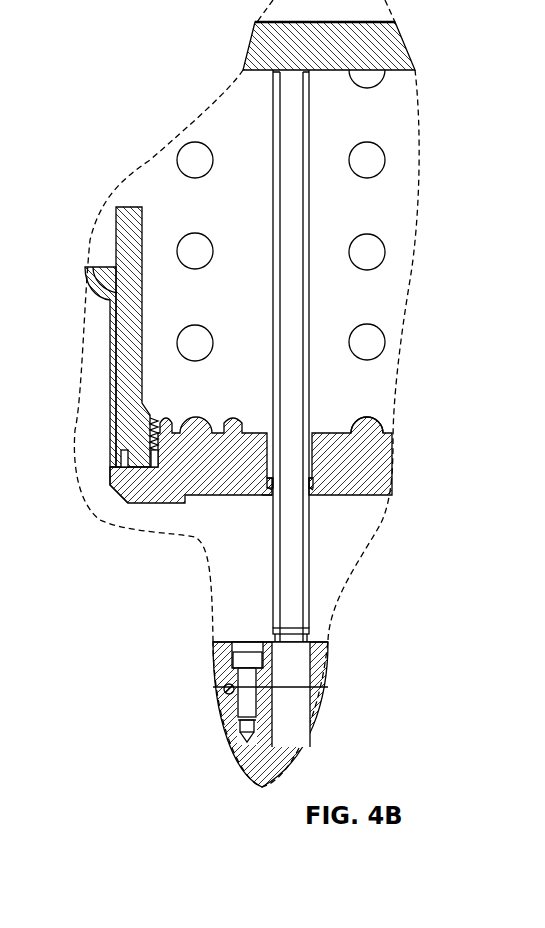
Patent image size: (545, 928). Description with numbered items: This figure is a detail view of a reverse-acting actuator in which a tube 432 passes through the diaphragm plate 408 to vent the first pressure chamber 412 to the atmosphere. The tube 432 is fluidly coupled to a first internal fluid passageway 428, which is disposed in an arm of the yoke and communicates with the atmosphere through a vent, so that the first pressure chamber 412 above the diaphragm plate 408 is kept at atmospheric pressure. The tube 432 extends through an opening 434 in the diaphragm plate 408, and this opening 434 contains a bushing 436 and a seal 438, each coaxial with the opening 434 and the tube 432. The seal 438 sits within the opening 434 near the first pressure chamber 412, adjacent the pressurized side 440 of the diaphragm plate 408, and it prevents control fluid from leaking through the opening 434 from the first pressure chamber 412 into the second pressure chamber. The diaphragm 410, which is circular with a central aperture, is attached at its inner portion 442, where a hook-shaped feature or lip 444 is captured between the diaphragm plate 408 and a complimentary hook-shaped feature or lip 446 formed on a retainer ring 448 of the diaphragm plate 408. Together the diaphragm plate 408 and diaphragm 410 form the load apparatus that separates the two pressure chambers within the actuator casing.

The diaphragm plate 408 is at (382, 456).
The diaphragm 410 is at (108, 292).
The first pressure chamber 412 is at (238, 221).
The first internal fluid passageway 428 is at (300, 720).
The tube 432 is at (296, 578).
The opening 434 is at (270, 497).
The bushing 436 is at (317, 433).
The seal 438 is at (312, 492).
The pressurized side 440 is at (315, 497).
The inner portion 442 is at (110, 462).
The hook-shaped feature or lip 444 is at (108, 484).
The complimentary hook-shaped feature or lip 446 is at (116, 420).
The retainer ring 448 is at (125, 232).